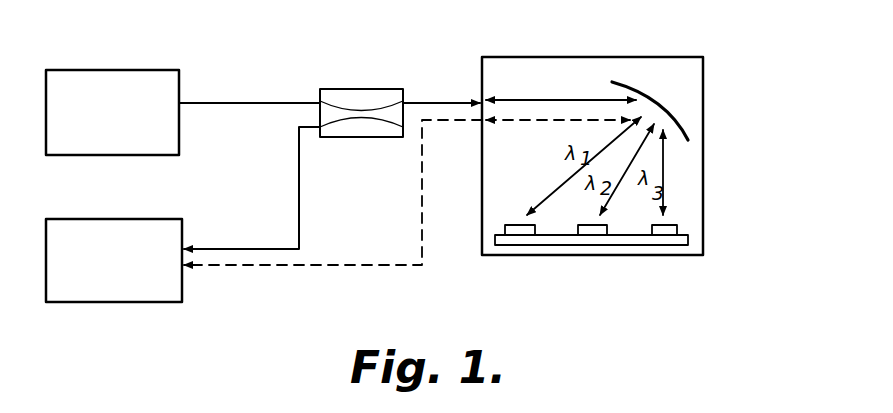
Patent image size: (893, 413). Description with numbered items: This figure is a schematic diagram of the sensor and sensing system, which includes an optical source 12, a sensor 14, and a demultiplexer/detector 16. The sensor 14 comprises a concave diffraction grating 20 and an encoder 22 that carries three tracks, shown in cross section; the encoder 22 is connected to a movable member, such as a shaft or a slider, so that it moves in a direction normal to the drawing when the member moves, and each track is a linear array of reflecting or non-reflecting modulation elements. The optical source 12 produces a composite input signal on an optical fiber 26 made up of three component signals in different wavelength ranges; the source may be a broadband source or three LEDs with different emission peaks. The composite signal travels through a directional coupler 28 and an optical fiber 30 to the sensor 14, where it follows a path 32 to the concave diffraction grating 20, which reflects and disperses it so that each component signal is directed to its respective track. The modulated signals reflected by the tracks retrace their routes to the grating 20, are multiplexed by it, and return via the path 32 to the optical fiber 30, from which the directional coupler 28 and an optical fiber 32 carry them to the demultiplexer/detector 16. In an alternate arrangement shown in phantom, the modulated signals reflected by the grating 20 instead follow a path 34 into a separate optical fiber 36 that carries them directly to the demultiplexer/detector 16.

The optical source 12 is at (103, 70).
The sensor 14 is at (597, 57).
The demultiplexer/detector 16 is at (103, 302).
The concave diffraction grating 20 is at (665, 104).
The encoder 22 is at (623, 246).
The optical fiber 26 is at (239, 104).
The directional coupler 28 is at (362, 88).
The optical fiber 30 is at (432, 98).
The path / optical fiber 32 is at (300, 190).
The path 34 is at (540, 122).
The optical fiber 36 is at (420, 213).